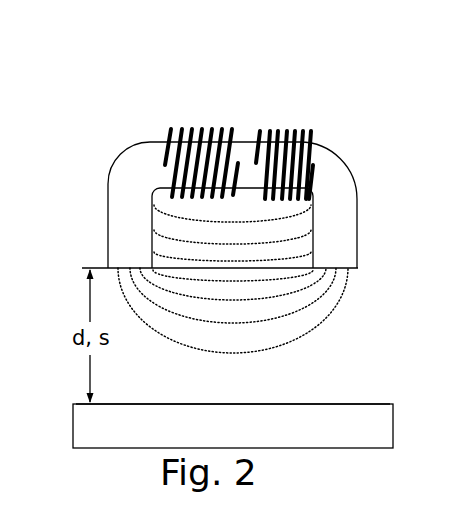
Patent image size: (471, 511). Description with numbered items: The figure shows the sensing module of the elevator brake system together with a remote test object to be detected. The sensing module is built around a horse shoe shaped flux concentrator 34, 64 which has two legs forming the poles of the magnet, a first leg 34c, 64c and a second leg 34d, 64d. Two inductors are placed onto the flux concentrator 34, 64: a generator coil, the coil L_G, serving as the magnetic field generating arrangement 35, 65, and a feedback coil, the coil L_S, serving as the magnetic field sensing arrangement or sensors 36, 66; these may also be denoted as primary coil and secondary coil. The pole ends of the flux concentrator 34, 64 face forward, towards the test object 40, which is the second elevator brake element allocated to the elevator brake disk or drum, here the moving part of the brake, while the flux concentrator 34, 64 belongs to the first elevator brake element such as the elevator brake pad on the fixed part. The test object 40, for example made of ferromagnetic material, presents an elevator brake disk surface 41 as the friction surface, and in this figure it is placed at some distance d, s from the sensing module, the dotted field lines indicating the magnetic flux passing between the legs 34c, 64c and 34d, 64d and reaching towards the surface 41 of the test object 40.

The flux concentrator 34 is at (263, 233).
The flux concentrator 64 is at (263, 233).
The magnetic field generating arrangement 35 is at (161, 122).
The magnetic field generating arrangement 65 is at (173, 134).
The magnetic field sensing arrangement 36 is at (322, 124).
The magnetic field sensing arrangement 66 is at (302, 130).
The first leg 34c is at (376, 156).
The first leg 64c is at (343, 195).
The second leg 34d is at (102, 205).
The second leg 64d is at (102, 205).
The second elevator brake element 40 is at (272, 397).
The elevator brake disk surface 41 is at (355, 401).